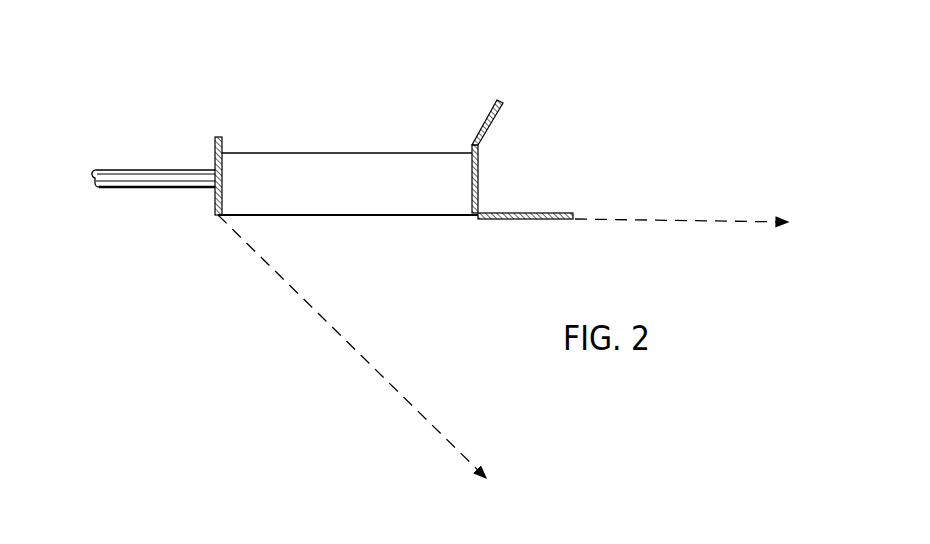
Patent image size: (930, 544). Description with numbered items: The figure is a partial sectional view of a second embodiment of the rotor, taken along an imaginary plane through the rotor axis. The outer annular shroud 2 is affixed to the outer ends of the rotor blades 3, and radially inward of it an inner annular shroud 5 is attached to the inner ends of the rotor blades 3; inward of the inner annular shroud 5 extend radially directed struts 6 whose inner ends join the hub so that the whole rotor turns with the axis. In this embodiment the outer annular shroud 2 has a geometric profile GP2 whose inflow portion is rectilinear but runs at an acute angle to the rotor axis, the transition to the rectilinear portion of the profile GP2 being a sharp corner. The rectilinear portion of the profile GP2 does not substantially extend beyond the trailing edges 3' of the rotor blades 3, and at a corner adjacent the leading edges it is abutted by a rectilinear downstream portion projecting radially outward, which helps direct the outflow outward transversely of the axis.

The outer annular shroud 2 is at (477, 120).
The rotor blades 3 is at (347, 140).
The trailing edges of the rotor blades 3' is at (348, 237).
The inner annular shroud 5 is at (223, 207).
The struts 6 is at (148, 183).
The geometric profile GP2 is at (479, 173).